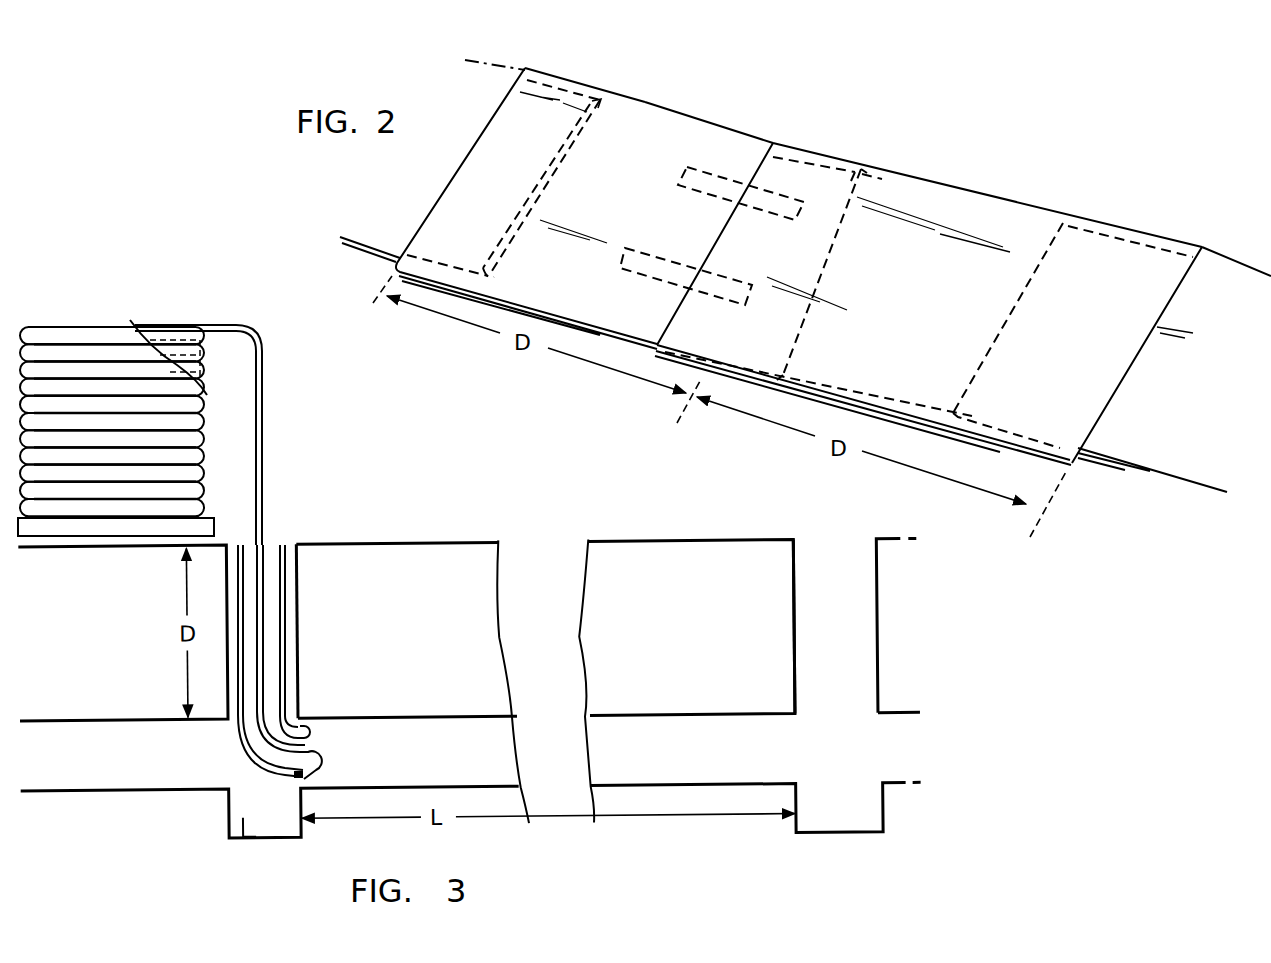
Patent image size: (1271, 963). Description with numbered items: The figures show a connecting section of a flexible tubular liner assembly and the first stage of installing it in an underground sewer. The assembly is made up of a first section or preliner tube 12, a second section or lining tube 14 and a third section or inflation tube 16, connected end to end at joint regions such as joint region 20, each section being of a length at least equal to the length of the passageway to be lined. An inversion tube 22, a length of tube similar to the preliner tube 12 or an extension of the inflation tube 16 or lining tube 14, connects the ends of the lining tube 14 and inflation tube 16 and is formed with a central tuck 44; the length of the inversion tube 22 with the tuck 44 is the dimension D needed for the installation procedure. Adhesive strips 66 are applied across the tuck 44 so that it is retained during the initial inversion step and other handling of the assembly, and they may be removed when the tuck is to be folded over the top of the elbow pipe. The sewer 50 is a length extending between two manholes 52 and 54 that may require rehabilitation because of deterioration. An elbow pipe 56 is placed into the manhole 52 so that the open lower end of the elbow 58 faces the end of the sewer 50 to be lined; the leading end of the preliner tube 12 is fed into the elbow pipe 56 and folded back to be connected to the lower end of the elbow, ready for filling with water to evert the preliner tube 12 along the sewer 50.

In FIG. 3, the preliner tube 12 is at (263, 352).
In FIG. 2, the lining tube 14 is at (1233, 286).
In FIG. 2, the inflation tube 16 is at (452, 143).
In FIG. 2, the joint region 20 is at (607, 333).
In FIG. 2, the inversion tube 22 is at (998, 213).
In FIG. 2, the tuck 44 is at (862, 167).
In FIG. 3, the sewer 50 is at (440, 719).
In FIG. 3, the manhole 52 is at (299, 652).
In FIG. 3, the manhole 54 is at (795, 650).
In FIG. 3, the elbow pipe 56 is at (287, 596).
In FIG. 3, the open lower end of the elbow 58 is at (296, 763).
In FIG. 2, the adhesive strips 66 is at (653, 256).